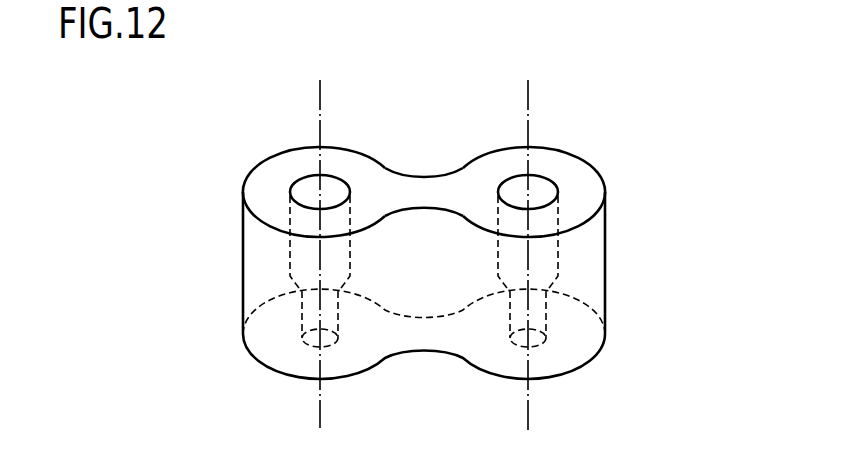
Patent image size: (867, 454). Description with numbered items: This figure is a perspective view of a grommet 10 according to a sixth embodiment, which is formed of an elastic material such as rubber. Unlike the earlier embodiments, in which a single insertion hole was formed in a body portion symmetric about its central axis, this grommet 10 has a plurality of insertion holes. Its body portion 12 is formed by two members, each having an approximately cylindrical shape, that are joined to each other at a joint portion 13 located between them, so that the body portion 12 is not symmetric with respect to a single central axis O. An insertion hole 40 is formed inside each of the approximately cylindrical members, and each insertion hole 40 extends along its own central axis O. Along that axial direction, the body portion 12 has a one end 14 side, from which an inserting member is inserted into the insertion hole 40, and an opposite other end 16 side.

The grommet 10 is at (606, 134).
The body portion 12 is at (392, 187).
The joint portion 13 is at (425, 220).
The one end 14 is at (257, 187).
The other end 16 is at (283, 344).
The insertion hole 40 is at (333, 187).
The central axis O is at (318, 100).